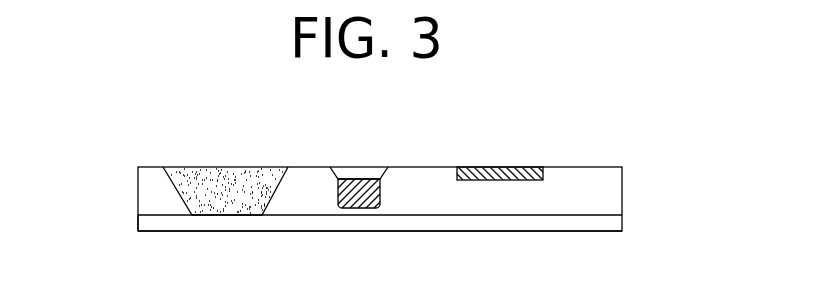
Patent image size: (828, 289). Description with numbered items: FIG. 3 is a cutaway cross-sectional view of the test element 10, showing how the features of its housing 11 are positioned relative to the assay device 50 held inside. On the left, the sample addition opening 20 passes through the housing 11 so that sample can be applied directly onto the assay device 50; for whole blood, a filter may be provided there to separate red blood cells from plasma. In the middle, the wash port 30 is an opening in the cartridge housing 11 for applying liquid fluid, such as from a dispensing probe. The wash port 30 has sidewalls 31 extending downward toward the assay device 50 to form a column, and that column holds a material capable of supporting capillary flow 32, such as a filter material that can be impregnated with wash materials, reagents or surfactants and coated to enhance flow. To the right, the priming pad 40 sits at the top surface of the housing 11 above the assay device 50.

The test element 10 is at (592, 130).
The housing 11 is at (622, 193).
The sample addition opening 20 is at (222, 165).
The wash port 30 is at (360, 166).
The sidewalls 31 is at (385, 193).
The material capable of supporting capillary flow 32 is at (360, 232).
The priming pad 40 is at (483, 165).
The assay device 50 is at (137, 213).